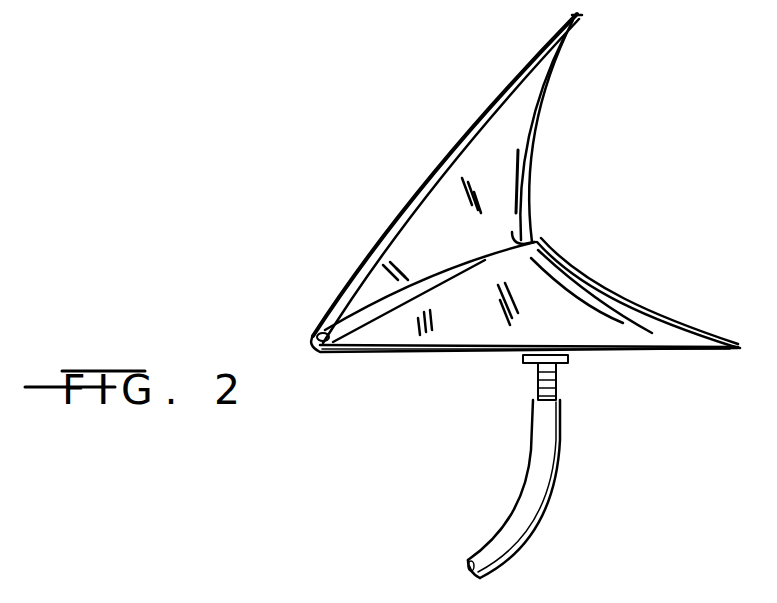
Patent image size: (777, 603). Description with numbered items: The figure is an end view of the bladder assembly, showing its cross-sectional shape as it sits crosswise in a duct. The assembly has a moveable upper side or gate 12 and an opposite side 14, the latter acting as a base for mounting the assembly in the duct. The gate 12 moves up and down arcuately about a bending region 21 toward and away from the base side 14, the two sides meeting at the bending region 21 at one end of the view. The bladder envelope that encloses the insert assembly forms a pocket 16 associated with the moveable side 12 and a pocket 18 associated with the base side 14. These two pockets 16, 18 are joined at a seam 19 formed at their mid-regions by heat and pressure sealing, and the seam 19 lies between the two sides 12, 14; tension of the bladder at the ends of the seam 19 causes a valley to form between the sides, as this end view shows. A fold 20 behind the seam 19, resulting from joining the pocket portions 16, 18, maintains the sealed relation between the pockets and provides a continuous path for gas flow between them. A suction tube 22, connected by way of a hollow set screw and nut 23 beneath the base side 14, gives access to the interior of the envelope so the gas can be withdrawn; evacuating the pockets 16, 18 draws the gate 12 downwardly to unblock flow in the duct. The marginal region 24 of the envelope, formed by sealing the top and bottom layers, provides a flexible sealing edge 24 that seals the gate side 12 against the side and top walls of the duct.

The side 12 is at (462, 142).
The opposite side 14 is at (462, 353).
The pocket 16 is at (512, 133).
The pocket 18 is at (553, 290).
The seam 19 is at (527, 212).
The fold 20 is at (427, 282).
The bending region 21 is at (320, 353).
The suction tube 22 is at (550, 500).
The hollow set screw and nut 23 is at (558, 370).
The marginal region 24 is at (578, 15).